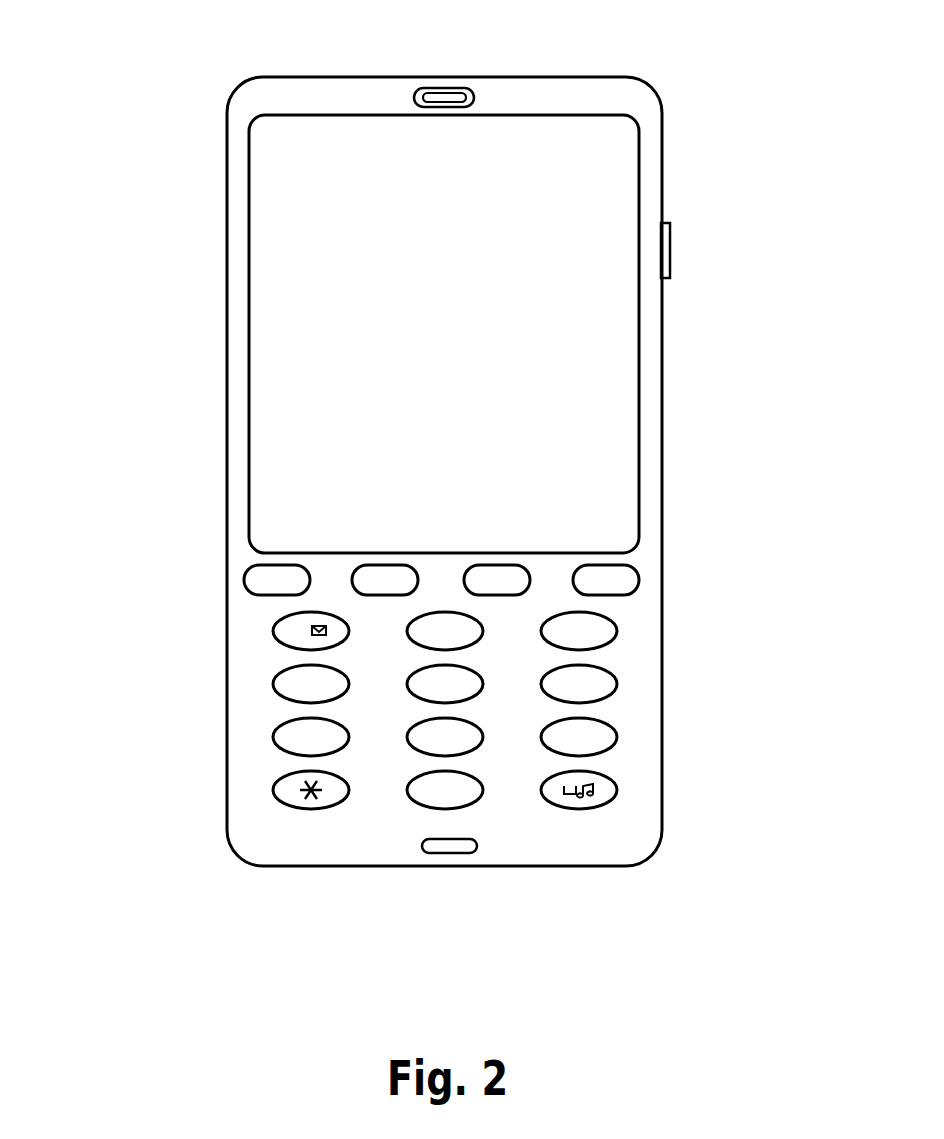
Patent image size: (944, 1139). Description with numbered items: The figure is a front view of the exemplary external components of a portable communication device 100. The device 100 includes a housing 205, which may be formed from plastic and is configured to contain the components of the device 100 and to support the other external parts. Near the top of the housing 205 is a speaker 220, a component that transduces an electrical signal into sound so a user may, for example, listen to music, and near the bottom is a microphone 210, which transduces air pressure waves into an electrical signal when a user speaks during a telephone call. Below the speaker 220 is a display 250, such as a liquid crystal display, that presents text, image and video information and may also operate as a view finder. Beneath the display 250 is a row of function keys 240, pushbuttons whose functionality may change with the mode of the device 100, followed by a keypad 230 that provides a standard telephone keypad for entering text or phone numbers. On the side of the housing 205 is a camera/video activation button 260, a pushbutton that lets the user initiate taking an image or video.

The portable communication device 100 is at (236, 47).
The housing 205 is at (228, 413).
The microphone 210 is at (465, 853).
The speaker 220 is at (456, 88).
The keypad 230 is at (675, 620).
The function keys 240 is at (675, 562).
The display 250 is at (622, 348).
The camera/video activation button 260 is at (666, 260).